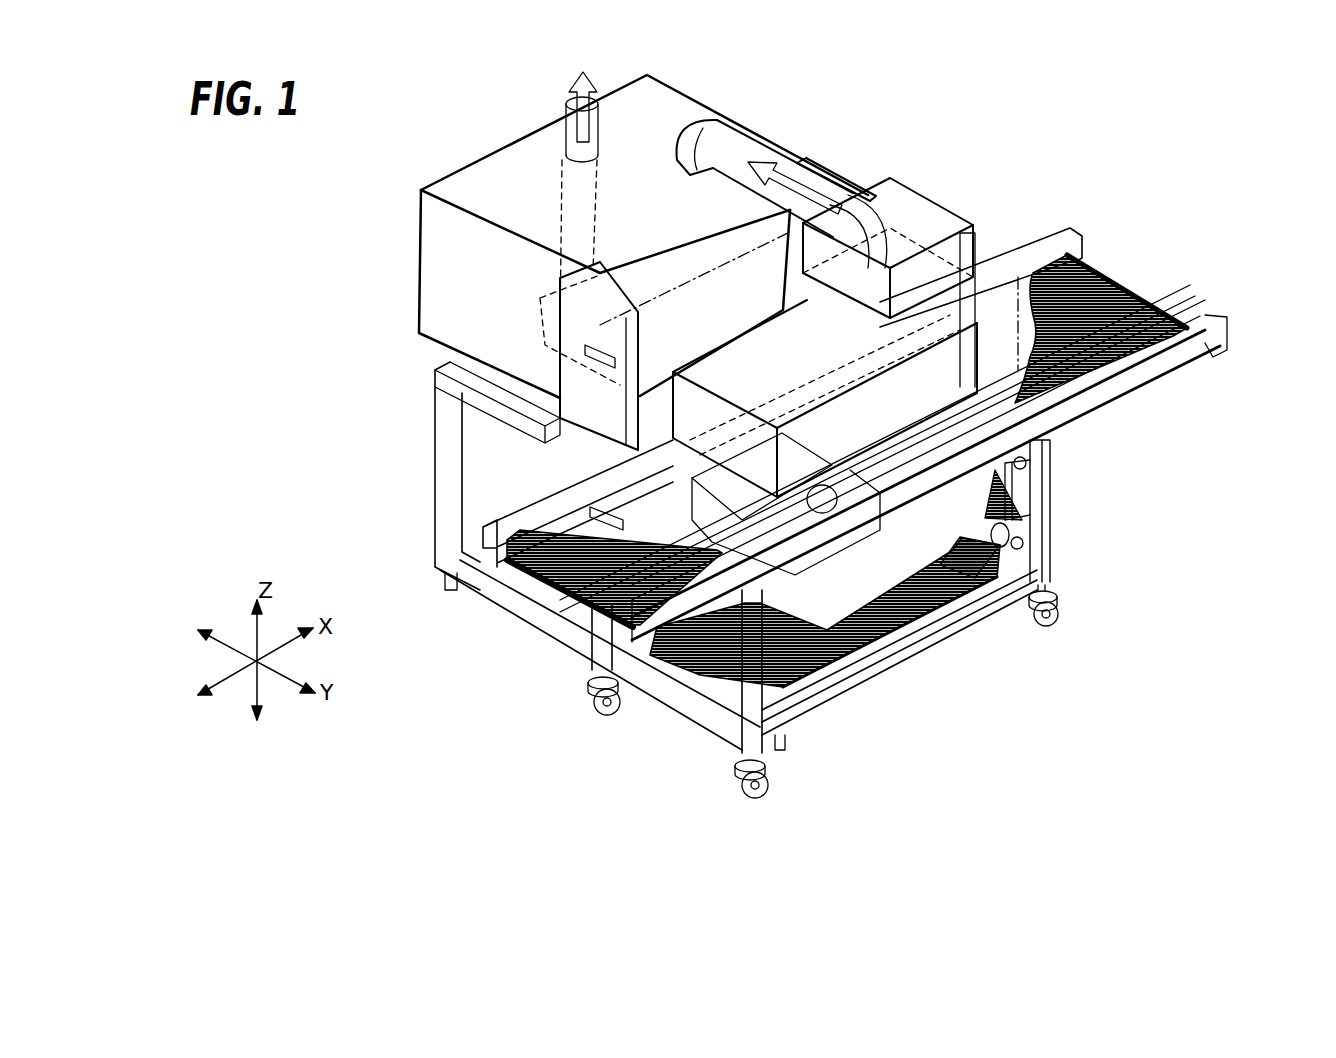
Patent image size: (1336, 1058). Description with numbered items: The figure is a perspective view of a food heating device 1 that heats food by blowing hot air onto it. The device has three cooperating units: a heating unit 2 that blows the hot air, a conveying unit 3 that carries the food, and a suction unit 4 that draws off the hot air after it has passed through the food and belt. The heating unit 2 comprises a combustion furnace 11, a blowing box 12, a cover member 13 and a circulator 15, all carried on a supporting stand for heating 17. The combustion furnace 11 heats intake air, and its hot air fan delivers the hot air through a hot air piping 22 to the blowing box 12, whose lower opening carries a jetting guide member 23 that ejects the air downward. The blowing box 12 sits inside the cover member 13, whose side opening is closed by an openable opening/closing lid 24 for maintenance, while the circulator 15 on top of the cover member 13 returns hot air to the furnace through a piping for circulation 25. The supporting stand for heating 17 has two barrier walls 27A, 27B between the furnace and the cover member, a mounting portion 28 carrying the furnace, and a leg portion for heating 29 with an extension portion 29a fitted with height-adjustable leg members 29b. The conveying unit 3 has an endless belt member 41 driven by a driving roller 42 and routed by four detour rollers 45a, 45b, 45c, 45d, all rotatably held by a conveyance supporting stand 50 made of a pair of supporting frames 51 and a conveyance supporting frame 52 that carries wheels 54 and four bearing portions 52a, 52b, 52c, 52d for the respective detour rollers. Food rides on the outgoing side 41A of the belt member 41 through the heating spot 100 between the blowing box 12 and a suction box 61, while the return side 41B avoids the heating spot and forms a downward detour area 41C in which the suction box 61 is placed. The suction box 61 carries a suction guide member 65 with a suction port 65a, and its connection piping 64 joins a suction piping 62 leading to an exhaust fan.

The food heating device 1 is at (948, 97).
The heating unit 2 is at (410, 208).
The conveying unit 3 is at (1232, 335).
The suction unit 4 is at (1050, 590).
The combustion furnace 11 is at (420, 272).
The blowing box 12 is at (1030, 375).
The cover member 13 is at (960, 330).
The circulator 15 is at (920, 200).
The supporting stand for heating 17 is at (433, 467).
The hot air piping 22 is at (560, 460).
The jetting guide member 23 is at (1050, 450).
The opening/closing lid 24 is at (966, 320).
The piping for circulation 25 is at (742, 150).
The first barrier wall 27A is at (843, 190).
The second barrier wall 27B is at (470, 410).
The mounting portion 28 is at (480, 437).
The leg portion for heating 29 is at (440, 535).
The extension portion 29a is at (600, 672).
The leg member 29b is at (790, 770).
The belt member 41 is at (547, 620).
The outgoing side 41A is at (590, 640).
The return side 41B is at (700, 705).
The detour area 41C is at (843, 663).
The driving roller 42 is at (605, 665).
The first detour roller 45a is at (1045, 500).
The second detour roller 45b is at (1028, 545).
The third detour roller 45c is at (688, 666).
The fourth detour roller 45d is at (777, 690).
The conveyance supporting stand 50 is at (1222, 318).
The supporting frame 51 is at (478, 567).
The conveyance supporting frame 52 is at (1045, 510).
The first bearing portion 52a is at (1055, 470).
The second bearing portion 52b is at (1042, 560).
The third bearing portion 52c is at (742, 722).
The fourth bearing portion 52d is at (800, 735).
The wheels 54 is at (1060, 617).
The suction box 61 is at (860, 583).
The suction piping 62 is at (566, 128).
The connection piping 64 is at (867, 640).
The suction guide member 65 is at (947, 540).
The suction port 65a is at (960, 640).
The heating spot 100 is at (883, 590).